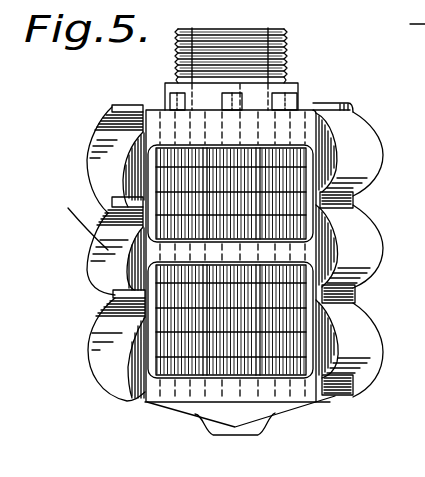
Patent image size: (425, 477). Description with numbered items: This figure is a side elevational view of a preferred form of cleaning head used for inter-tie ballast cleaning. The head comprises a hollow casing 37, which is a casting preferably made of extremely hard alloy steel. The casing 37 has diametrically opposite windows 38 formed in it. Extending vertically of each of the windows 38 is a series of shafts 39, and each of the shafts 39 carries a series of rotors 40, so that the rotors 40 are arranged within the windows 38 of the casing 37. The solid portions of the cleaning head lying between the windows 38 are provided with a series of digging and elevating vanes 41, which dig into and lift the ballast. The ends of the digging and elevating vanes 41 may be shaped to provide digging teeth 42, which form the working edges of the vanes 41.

The hollow casing 37 is at (310, 244).
The windows 38 is at (311, 157).
The shafts 39 is at (282, 106).
The rotors 40 is at (303, 338).
The digging and elevating vanes 41 is at (367, 155).
The digging teeth 42 is at (353, 195).